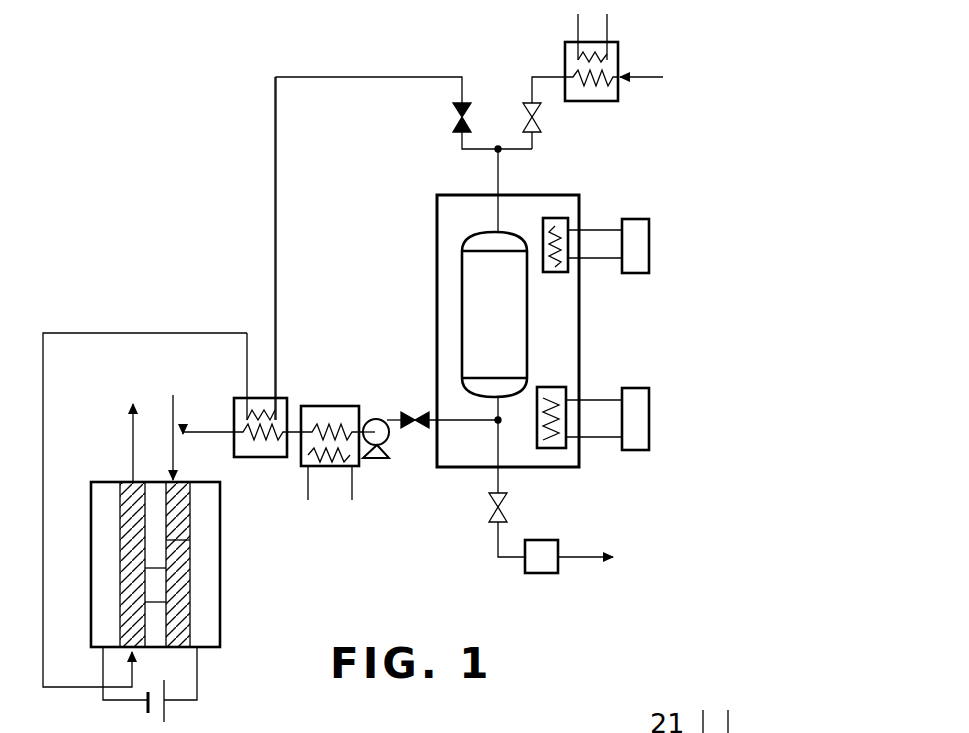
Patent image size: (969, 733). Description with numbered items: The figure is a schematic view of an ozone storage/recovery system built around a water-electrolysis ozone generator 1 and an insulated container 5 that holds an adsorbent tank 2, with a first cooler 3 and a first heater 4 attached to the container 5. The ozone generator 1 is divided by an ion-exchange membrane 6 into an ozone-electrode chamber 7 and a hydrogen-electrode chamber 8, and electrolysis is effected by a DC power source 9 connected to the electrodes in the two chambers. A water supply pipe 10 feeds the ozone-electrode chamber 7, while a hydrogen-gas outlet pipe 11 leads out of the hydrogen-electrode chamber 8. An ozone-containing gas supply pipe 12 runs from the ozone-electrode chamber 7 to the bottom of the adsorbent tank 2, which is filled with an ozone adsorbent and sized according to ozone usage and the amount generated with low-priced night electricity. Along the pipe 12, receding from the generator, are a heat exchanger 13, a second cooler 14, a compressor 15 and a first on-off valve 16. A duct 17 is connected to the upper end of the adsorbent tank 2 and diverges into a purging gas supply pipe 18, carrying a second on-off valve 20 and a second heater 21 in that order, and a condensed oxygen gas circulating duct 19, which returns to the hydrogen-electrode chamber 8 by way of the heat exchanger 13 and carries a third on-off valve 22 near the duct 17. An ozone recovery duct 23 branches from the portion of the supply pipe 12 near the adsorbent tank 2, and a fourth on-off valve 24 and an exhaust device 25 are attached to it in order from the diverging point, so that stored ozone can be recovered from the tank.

The water-electrolysis ozone generator 1 is at (222, 507).
The adsorbent tank 2 is at (520, 320).
The first cooler 3 is at (553, 387).
The first heater 4 is at (565, 220).
The insulated container 5 is at (555, 195).
The ion-exchange membrane 6 is at (158, 568).
The ozone-electrode chamber 7 is at (180, 540).
The hydrogen-electrode chamber 8 is at (168, 602).
The DC power source 9 is at (148, 708).
The water supply pipe 10 is at (173, 412).
The hydrogen-gas outlet pipe 11 is at (130, 418).
The ozone-containing gas supply pipe 12 is at (212, 432).
The heat exchanger 13 is at (281, 398).
The second cooler 14 is at (337, 406).
The compressor 15 is at (380, 458).
The first on-off valve 16 is at (412, 410).
The duct 17 is at (498, 172).
The purging gas supply pipe 18 is at (650, 79).
The condensed oxygen gas circulating duct 19 is at (431, 77).
The second on-off valve 20 is at (540, 118).
The second heater 21 is at (618, 50).
The third on-off valve 22 is at (466, 117).
The ozone recovery duct 23 is at (498, 478).
The fourth on-off valve 24 is at (492, 510).
The exhaust device 25 is at (558, 543).